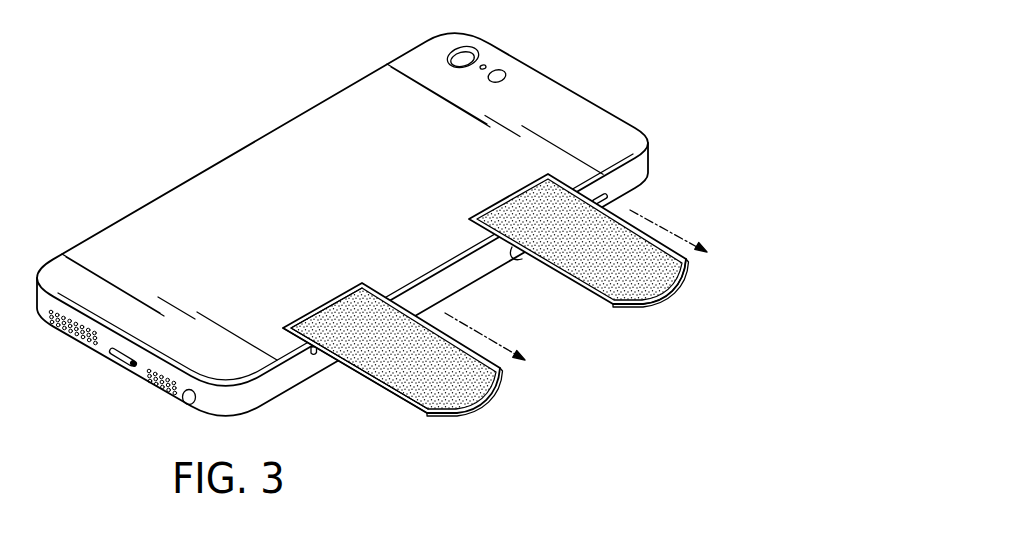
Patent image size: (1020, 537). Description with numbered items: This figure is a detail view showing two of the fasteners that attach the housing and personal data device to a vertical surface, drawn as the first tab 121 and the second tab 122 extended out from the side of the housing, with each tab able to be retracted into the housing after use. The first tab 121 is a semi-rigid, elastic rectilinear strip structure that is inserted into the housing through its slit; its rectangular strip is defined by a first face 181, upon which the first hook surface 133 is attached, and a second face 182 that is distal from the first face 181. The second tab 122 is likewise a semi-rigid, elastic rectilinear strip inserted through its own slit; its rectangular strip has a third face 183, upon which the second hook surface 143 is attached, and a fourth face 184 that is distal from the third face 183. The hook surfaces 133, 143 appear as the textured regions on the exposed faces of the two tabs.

The first tab 121 is at (423, 397).
The second tab 122 is at (640, 264).
The first hook surface 133 is at (427, 387).
The second hook surface 143 is at (635, 249).
The first face 181 is at (372, 361).
The second face 182 is at (382, 393).
The third face 183 is at (663, 265).
The fourth face 184 is at (553, 275).